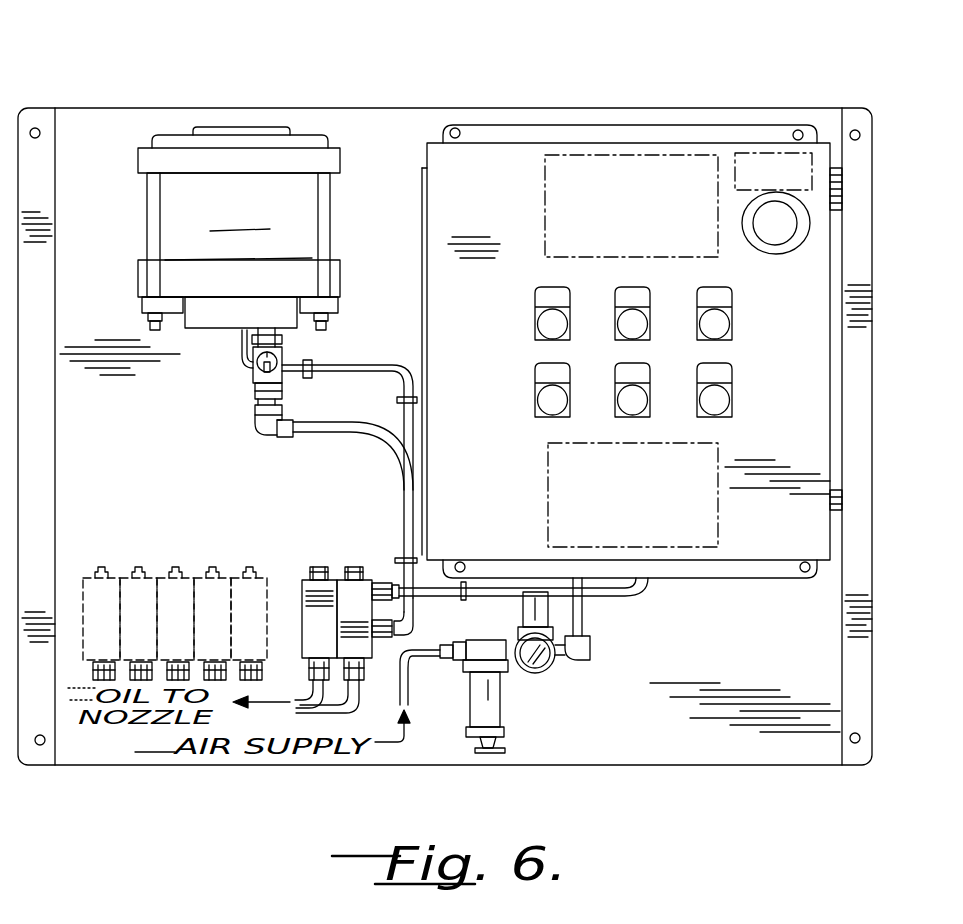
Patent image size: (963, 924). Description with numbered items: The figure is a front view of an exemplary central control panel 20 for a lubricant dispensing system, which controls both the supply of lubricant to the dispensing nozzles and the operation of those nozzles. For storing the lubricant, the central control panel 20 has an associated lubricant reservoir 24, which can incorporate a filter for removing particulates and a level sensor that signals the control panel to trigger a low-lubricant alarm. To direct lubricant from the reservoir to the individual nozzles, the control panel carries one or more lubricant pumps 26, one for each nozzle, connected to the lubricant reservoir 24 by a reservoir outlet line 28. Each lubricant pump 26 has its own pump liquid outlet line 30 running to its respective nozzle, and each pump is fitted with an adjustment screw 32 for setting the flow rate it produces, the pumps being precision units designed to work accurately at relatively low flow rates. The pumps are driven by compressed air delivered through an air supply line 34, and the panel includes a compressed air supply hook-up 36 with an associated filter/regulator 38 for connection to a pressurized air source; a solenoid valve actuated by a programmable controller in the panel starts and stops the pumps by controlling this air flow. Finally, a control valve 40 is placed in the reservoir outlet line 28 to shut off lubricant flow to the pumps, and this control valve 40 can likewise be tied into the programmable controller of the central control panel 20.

The central control panel 20 is at (648, 106).
The lubricant reservoir 24 is at (205, 185).
The lubricant pump 26 is at (310, 612).
The reservoir outlet line 28 is at (357, 405).
The pump liquid outlet line 30 is at (295, 704).
The adjustment screw 32 is at (350, 580).
The air supply line 34 is at (444, 600).
The compressed air supply hook-up 36 is at (412, 697).
The filter/regulator 38 is at (487, 712).
The control valve 40 is at (253, 377).